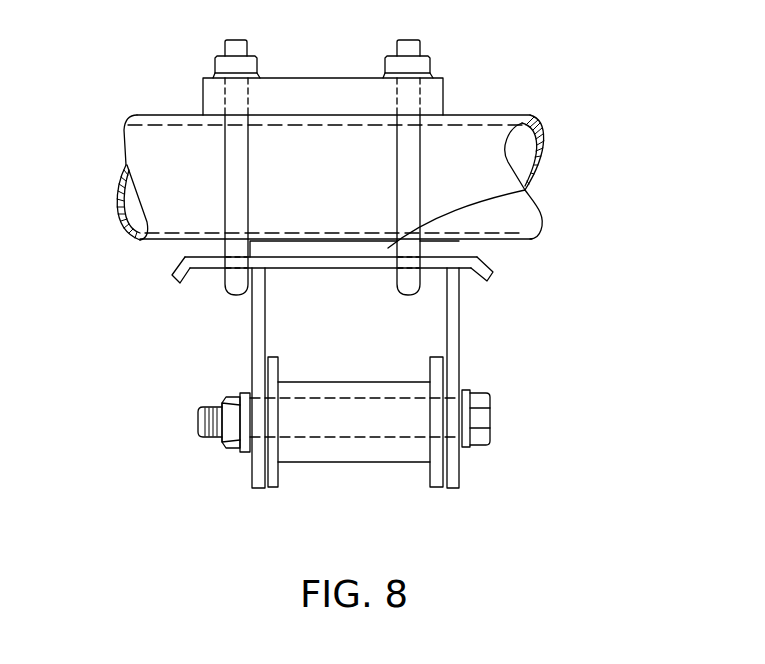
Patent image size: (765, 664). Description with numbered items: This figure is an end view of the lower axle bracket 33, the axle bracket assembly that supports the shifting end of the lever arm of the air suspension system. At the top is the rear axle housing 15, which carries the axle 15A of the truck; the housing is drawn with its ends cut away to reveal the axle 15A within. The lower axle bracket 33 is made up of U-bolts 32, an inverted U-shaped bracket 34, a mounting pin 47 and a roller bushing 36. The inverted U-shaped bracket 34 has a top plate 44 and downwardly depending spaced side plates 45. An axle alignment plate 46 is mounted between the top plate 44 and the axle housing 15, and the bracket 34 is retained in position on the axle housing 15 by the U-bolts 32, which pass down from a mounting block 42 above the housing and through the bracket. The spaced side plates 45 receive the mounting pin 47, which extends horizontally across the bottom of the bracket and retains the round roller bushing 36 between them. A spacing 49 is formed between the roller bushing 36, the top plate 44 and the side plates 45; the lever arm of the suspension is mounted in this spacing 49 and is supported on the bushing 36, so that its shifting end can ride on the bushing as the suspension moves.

The rear axle housing 15 is at (545, 147).
The axle 15A is at (487, 120).
The U-bolts 32 is at (407, 147).
The lower axle bracket 33 is at (375, 364).
The inverted U-shaped bracket 34 is at (478, 265).
The roller bushing 36 is at (387, 465).
The mounting block 42 is at (378, 95).
The top plate 44 is at (180, 263).
The side plates 45 is at (252, 322).
The axle alignment plate 46 is at (525, 188).
The mounting pin 47 is at (195, 420).
The spacing 49 is at (330, 333).